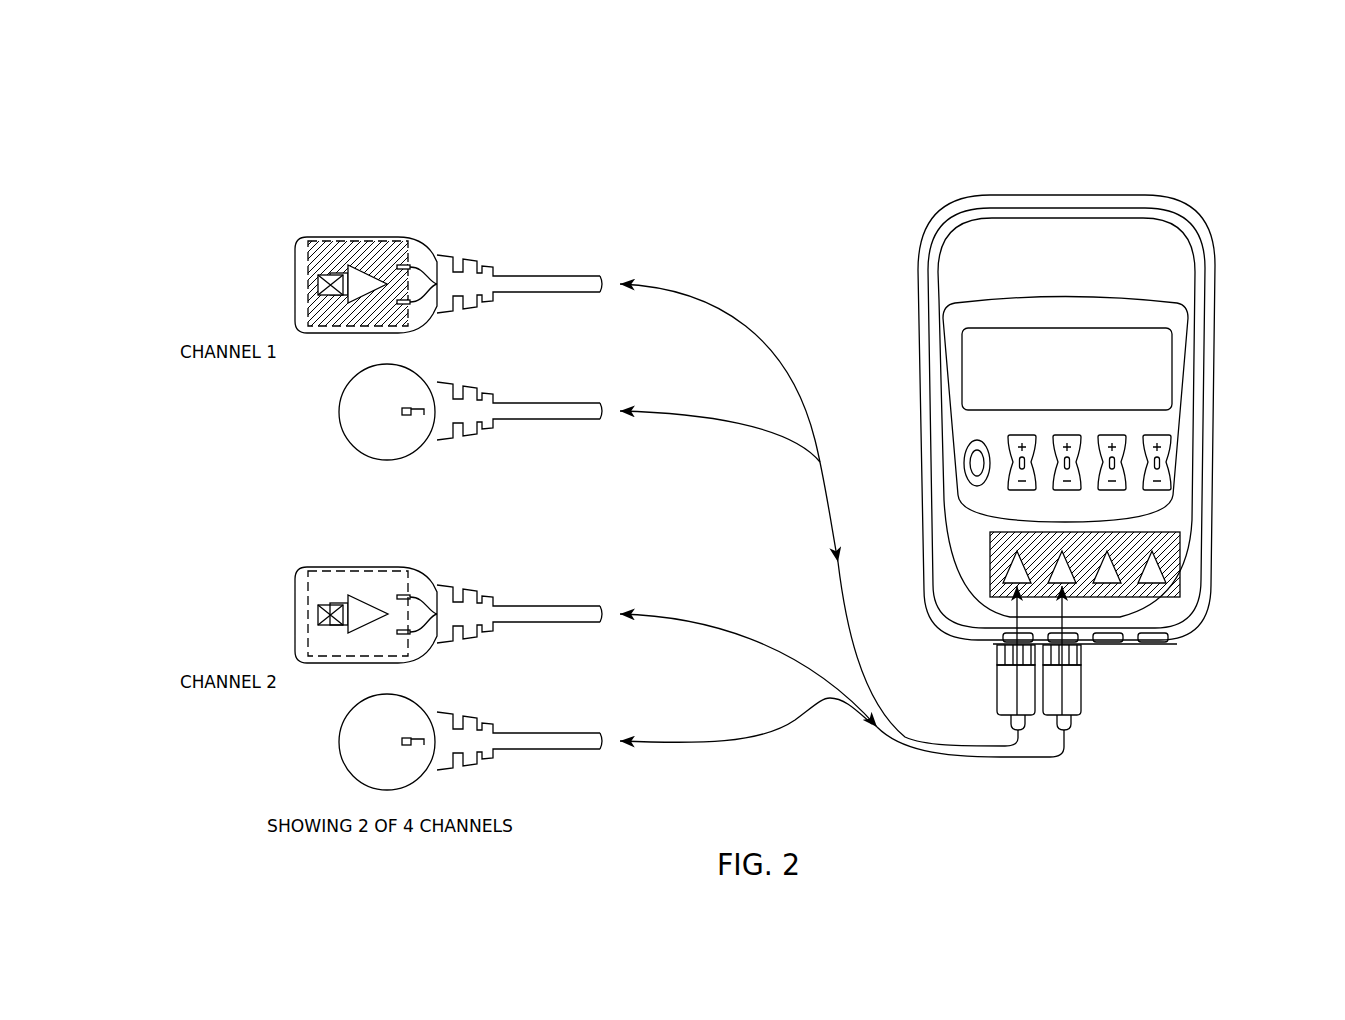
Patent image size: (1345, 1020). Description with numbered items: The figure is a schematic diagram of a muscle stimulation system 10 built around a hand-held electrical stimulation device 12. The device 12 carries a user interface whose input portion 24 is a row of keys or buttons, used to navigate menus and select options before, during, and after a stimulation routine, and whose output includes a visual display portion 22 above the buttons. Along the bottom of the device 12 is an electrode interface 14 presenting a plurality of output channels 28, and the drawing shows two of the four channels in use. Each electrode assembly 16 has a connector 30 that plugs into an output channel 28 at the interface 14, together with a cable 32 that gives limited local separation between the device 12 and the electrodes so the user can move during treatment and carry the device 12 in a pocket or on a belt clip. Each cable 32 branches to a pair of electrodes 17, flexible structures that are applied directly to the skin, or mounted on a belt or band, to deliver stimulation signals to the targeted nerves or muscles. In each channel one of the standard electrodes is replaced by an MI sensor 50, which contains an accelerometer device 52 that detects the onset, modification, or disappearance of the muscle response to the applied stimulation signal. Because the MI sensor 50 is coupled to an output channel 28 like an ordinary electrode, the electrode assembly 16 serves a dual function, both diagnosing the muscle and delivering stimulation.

The muscle stimulation system 10 is at (1208, 102).
The electrical stimulation device 12 is at (1052, 264).
The electrode interface 14 is at (1168, 653).
The electrode assembly 16 is at (785, 758).
The electrode 17 is at (467, 218).
The visual display portion 22 is at (1052, 380).
The input portion 24 is at (980, 437).
The output channels 28 is at (1147, 645).
The connector 30 is at (997, 682).
The cable 32 is at (518, 604).
The MI sensor 50 is at (328, 235).
The accelerometer device 52 is at (360, 593).